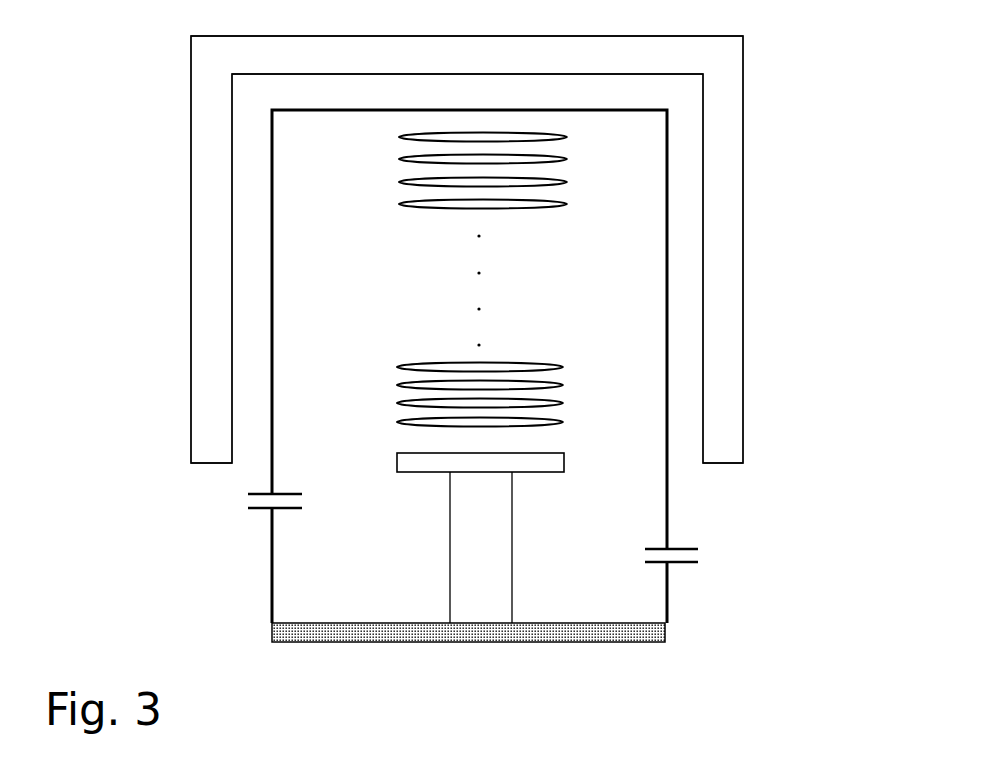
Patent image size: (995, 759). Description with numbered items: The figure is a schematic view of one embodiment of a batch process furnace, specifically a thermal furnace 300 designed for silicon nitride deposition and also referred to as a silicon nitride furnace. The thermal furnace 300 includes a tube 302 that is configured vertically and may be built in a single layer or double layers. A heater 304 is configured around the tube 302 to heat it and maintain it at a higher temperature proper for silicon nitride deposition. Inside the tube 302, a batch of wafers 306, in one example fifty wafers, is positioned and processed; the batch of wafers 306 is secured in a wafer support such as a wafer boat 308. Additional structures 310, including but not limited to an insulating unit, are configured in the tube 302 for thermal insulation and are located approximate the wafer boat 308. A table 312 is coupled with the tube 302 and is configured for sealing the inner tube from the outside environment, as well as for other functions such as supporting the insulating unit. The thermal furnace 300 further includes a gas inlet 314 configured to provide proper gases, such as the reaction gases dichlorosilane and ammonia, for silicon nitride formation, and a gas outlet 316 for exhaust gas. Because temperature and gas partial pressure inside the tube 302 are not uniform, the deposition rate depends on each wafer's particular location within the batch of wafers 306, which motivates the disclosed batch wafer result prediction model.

The thermal furnace 300 is at (792, 81).
The tube 302 is at (672, 489).
The heater 304 is at (191, 66).
The batch of wafers 306 is at (379, 146).
The wafer boat 308 is at (397, 458).
The additional structures 310 is at (452, 507).
The table 312 is at (506, 632).
The gas inlet 314 is at (703, 556).
The gas outlet 316 is at (243, 501).